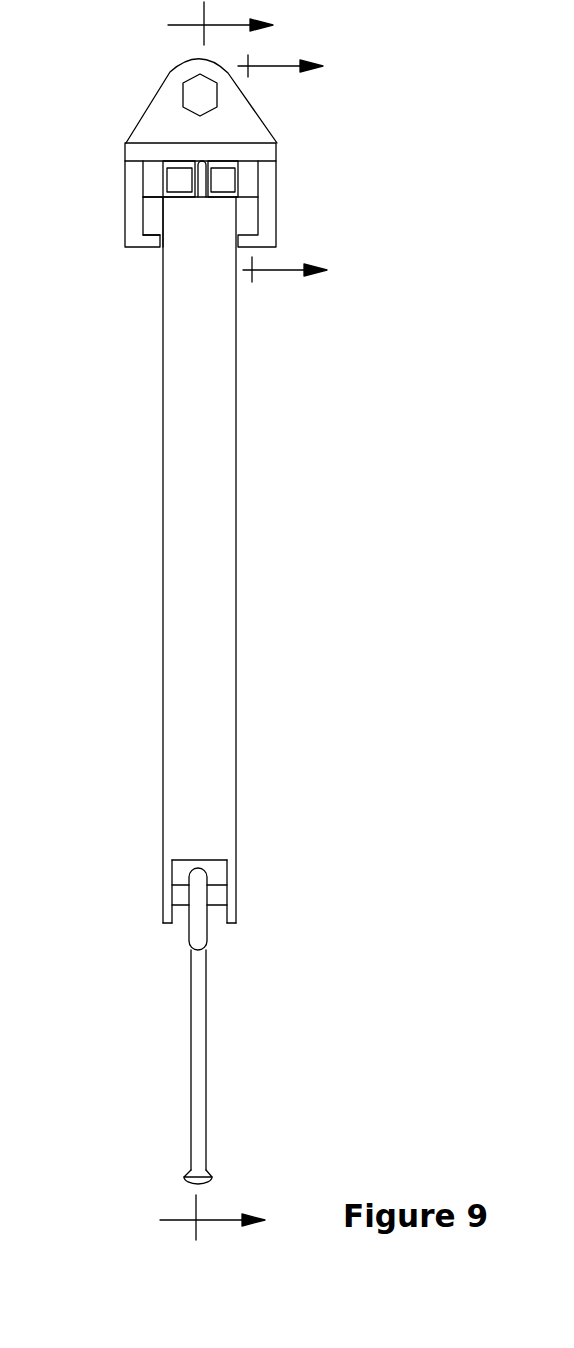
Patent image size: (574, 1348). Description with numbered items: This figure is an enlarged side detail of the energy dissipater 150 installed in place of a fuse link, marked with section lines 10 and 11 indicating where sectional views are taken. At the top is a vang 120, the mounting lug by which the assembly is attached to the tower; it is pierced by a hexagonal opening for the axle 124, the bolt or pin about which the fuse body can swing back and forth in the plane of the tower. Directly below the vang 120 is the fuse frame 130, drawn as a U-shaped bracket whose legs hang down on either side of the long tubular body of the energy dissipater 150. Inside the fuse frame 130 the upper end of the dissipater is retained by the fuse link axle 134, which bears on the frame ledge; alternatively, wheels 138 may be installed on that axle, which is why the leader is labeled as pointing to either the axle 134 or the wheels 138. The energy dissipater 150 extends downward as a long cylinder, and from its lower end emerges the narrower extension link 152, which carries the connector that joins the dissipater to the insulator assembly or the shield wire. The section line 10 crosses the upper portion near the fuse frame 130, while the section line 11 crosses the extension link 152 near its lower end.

The section line 10- 10 is at (247, 156).
The section line 11- 11 is at (212, 1234).
The vang 120 is at (148, 122).
The axle 124 is at (208, 91).
The fuse frame 130 is at (120, 196).
The fuse link axle 134 is at (120, 311).
The wheels 138 is at (155, 217).
The energy dissipater 150 is at (227, 547).
The extension link 152 is at (207, 1048).